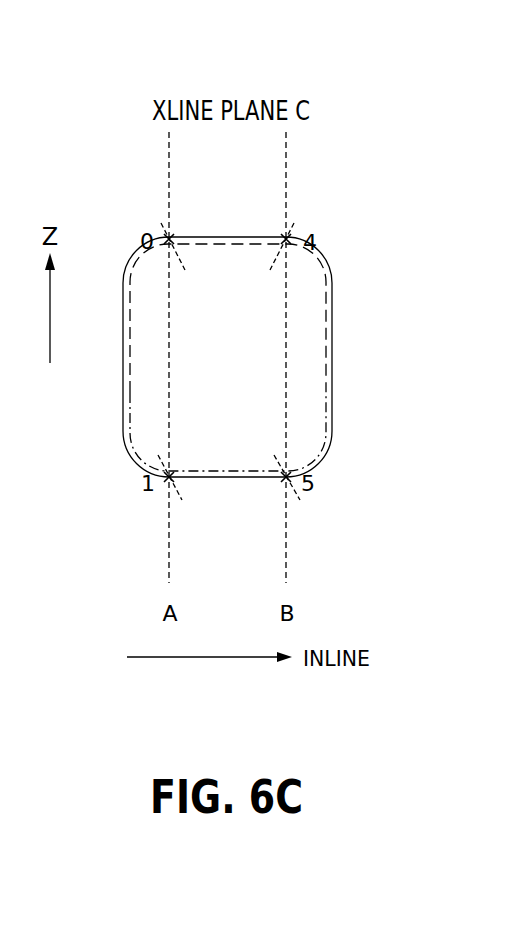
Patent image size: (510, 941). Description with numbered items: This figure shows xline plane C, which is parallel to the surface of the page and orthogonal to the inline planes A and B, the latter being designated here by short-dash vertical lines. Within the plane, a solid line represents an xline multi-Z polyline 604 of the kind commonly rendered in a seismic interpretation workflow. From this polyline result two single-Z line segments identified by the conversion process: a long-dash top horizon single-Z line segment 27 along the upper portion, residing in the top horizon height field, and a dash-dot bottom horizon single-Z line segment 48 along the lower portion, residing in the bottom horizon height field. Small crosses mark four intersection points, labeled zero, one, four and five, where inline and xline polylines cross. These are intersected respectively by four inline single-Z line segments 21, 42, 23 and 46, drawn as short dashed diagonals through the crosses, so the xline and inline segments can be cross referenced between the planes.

The xline multi-Z polyline 604 is at (123, 403).
The inline single-Z line segment 21 is at (160, 224).
The inline single-Z line segment 23 is at (295, 224).
The top horizon single-Z line segment 27 is at (206, 246).
The inline single-Z line segment 42 is at (160, 452).
The inline single-Z line segment 46 is at (273, 447).
The bottom horizon single-Z line segment 48 is at (190, 469).